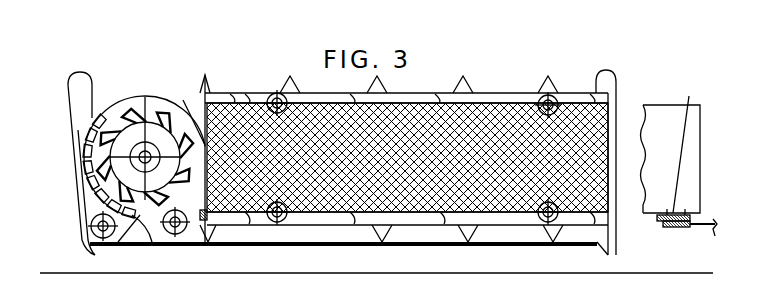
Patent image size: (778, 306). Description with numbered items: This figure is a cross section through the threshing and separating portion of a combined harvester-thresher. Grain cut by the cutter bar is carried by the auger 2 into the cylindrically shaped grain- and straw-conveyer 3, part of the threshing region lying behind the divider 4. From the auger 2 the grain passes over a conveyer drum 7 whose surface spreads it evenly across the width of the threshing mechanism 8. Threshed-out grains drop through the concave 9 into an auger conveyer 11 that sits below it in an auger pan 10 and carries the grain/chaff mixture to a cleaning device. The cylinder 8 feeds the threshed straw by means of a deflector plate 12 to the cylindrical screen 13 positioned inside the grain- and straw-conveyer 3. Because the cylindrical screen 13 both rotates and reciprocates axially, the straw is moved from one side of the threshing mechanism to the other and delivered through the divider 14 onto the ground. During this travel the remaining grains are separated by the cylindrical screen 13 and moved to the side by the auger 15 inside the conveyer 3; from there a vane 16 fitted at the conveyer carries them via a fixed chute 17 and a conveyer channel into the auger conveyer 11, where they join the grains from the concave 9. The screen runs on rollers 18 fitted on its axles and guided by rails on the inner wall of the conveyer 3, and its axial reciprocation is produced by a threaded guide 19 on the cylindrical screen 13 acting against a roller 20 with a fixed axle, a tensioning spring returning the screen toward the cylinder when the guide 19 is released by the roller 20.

The auger 2 is at (548, 94).
The grain- and straw-conveyer 3 is at (500, 93).
The divider 4 is at (75, 82).
The conveyer drum 7 is at (170, 244).
The threshing mechanism 8 is at (138, 116).
The concave 9 is at (84, 184).
The auger pan 10 is at (130, 244).
The auger conveyer 11 is at (100, 246).
The deflector plate 12 is at (145, 97).
The cylindrical screen 13 is at (421, 246).
The divider 14 is at (612, 84).
The auger 15 is at (235, 93).
The vane 16 is at (205, 246).
The fixed chute 17 is at (183, 100).
The rollers 18 is at (283, 220).
The threaded guide 19 is at (687, 131).
The roller 20 is at (672, 228).